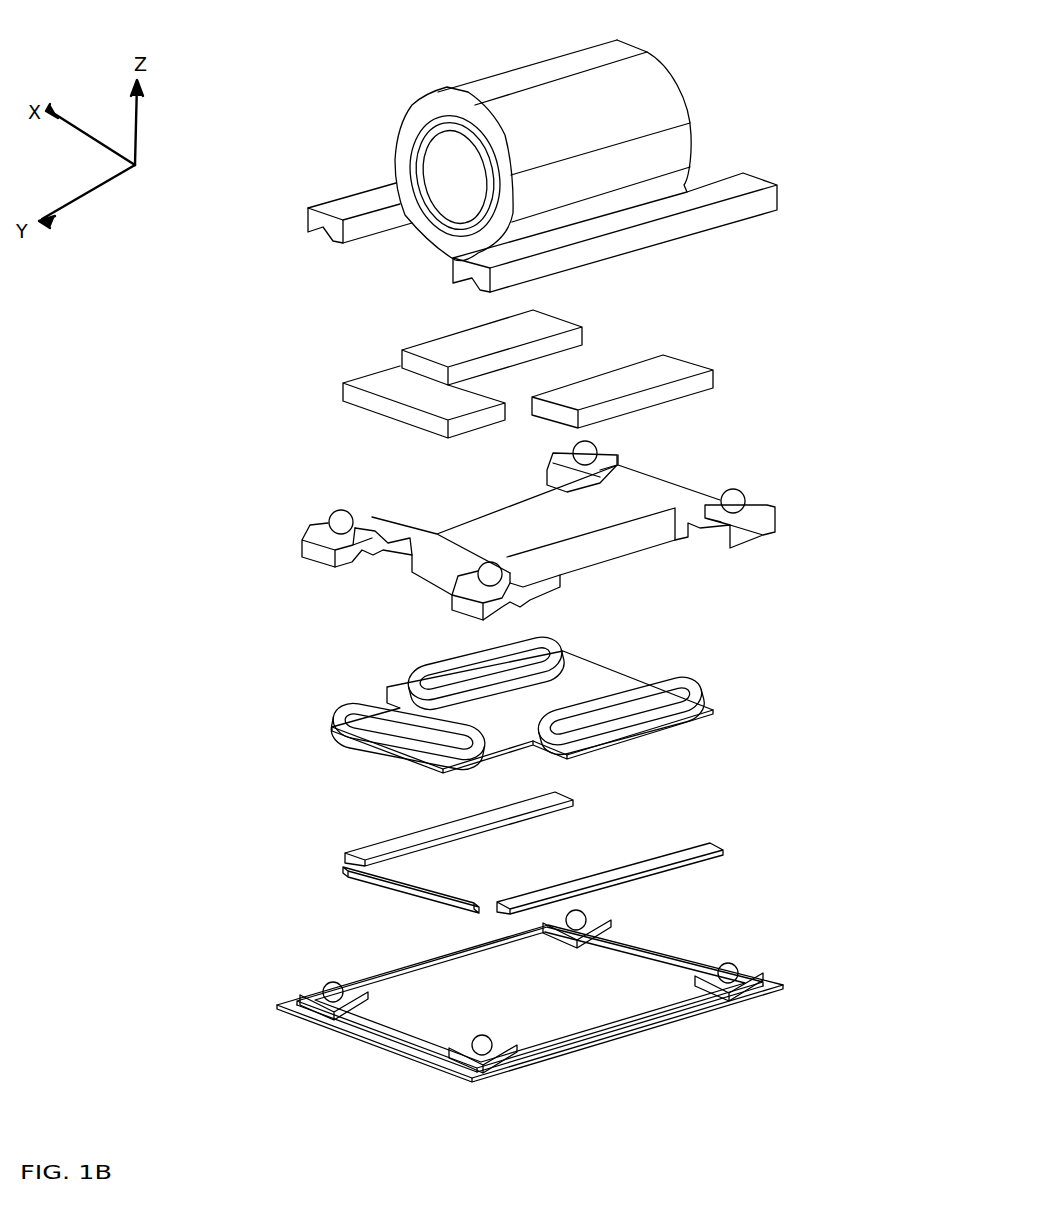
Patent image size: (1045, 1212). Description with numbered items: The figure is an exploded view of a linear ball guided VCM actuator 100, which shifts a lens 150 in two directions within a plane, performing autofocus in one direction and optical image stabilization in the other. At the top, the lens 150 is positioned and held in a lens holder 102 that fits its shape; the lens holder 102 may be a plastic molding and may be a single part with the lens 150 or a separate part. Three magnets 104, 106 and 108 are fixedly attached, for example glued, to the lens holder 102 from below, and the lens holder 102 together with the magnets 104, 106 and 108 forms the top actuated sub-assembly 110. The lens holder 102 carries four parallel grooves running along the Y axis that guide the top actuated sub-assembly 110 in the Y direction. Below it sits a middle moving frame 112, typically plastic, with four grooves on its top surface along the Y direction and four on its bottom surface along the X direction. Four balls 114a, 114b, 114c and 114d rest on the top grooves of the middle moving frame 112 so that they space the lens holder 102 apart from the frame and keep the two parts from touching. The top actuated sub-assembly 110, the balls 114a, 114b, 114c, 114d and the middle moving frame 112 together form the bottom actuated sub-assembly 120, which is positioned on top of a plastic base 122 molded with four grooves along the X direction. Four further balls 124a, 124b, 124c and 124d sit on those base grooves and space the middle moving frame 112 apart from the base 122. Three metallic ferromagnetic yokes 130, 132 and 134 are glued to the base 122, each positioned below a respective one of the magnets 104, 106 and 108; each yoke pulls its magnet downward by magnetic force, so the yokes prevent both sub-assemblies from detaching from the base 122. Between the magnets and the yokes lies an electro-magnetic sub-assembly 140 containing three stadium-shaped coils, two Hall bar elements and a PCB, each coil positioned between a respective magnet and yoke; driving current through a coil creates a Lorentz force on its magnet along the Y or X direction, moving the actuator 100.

The linear ball guided VCM actuator 100 is at (432, 68).
The lens holder 102 is at (673, 110).
The lens 150 is at (438, 157).
The magnet 104 is at (368, 414).
The magnet 106 is at (698, 388).
The magnet 108 is at (432, 352).
The top actuated sub-assembly 110 is at (847, 35).
The middle moving frame 112 is at (523, 533).
The ball 114a is at (597, 450).
The ball 114b is at (330, 520).
The ball 114c is at (740, 492).
The ball 114d is at (480, 580).
The bottom actuated sub-assembly 120 is at (213, 47).
The base 122 is at (543, 1011).
The ball 124a is at (586, 920).
The ball 124b is at (737, 968).
The ball 124c is at (325, 990).
The ball 124d is at (476, 1050).
The ferromagnetic yoke 130 is at (534, 850).
The ferromagnetic yoke 132 is at (715, 851).
The ferromagnetic yoke 134 is at (380, 857).
The electro-magnetic sub-assembly 140 is at (717, 630).